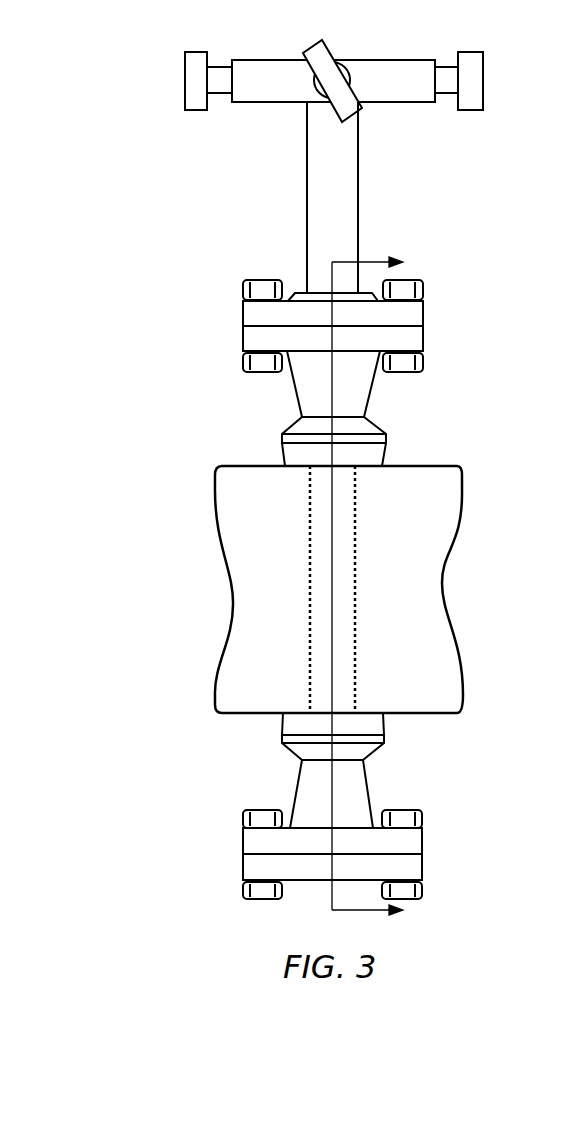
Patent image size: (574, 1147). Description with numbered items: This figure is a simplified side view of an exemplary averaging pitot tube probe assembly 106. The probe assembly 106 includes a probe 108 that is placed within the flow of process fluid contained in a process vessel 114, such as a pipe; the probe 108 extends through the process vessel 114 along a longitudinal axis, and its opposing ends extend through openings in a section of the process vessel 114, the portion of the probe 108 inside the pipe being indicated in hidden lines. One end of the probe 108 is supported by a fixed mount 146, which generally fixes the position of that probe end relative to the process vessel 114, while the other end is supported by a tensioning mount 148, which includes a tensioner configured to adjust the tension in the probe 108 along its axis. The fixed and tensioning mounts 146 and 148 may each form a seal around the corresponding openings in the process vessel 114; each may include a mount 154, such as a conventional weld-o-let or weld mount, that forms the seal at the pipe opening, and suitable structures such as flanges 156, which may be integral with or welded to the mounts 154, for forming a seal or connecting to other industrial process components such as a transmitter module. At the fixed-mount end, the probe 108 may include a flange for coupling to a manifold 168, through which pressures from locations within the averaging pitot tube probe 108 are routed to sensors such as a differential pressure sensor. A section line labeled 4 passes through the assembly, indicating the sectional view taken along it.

The probe assembly 106 is at (120, 305).
The probe 108 is at (347, 578).
The process vessel 114 is at (227, 500).
The fixed mount 146 is at (228, 402).
The tensioning mount 148 is at (447, 770).
The mount 154 is at (367, 433).
The flange 156 is at (415, 338).
The manifold 168 is at (420, 67).
The section line 4- 4 is at (368, 586).